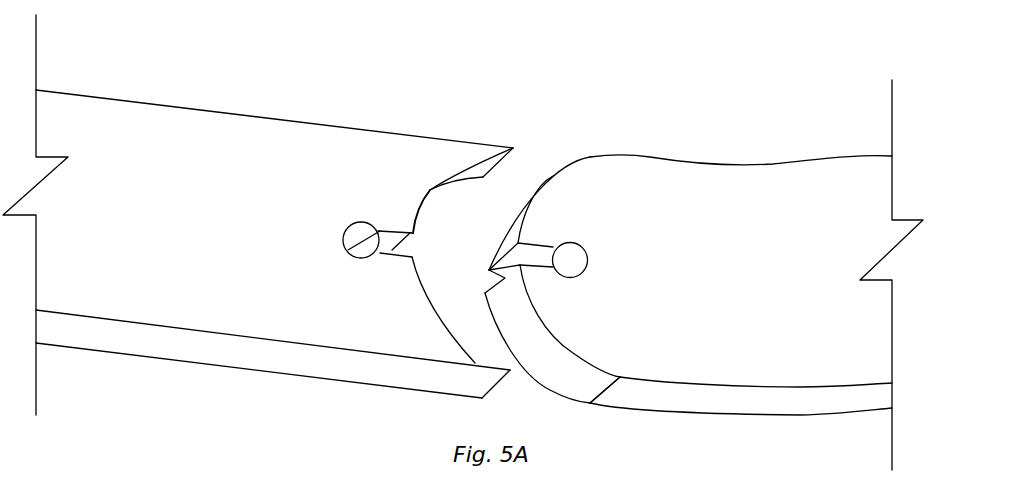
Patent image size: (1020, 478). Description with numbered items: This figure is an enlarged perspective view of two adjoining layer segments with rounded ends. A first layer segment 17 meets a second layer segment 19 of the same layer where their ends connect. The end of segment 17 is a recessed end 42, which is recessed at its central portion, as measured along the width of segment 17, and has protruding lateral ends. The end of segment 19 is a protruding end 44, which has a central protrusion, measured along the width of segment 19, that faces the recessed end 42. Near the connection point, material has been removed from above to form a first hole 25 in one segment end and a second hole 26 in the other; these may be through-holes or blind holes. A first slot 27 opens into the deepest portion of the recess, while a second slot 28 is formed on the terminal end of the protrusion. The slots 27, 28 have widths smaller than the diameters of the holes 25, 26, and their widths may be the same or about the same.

The layer segment 17 is at (223, 192).
The layer segment 19 is at (785, 208).
The first hole 25 is at (358, 241).
The first slot 27 is at (392, 250).
The second hole 26 is at (572, 257).
The second slot 28 is at (533, 258).
The recessed end 42 is at (440, 325).
The protruding end 44 is at (538, 352).